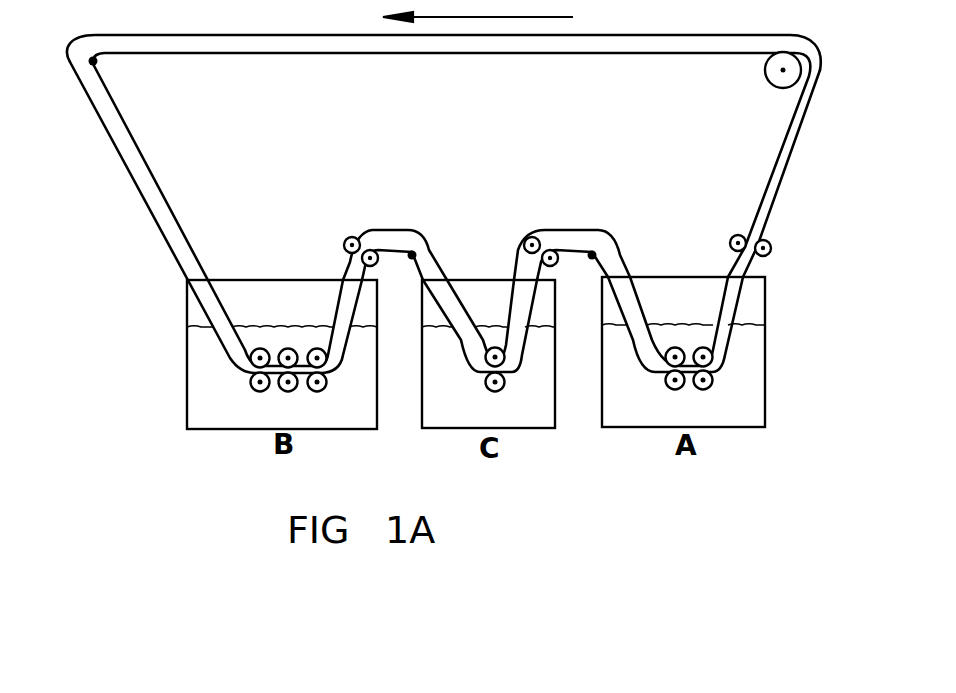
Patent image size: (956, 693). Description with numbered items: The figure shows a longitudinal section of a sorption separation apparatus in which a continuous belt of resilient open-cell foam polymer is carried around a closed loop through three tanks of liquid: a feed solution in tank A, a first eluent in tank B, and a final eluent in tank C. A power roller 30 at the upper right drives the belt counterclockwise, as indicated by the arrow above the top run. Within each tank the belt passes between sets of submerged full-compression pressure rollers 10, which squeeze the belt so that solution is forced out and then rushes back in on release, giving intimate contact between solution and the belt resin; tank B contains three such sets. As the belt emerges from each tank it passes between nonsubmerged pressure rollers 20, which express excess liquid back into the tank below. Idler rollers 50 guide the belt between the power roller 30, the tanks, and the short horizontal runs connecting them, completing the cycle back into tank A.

The set of full-submerged, full-compression pressure rollers 10 is at (261, 396).
The set of nonsubmerged, full-compression pressure rollers 20 is at (357, 238).
The power roller 30 is at (776, 86).
The idler roller 50 is at (97, 63).